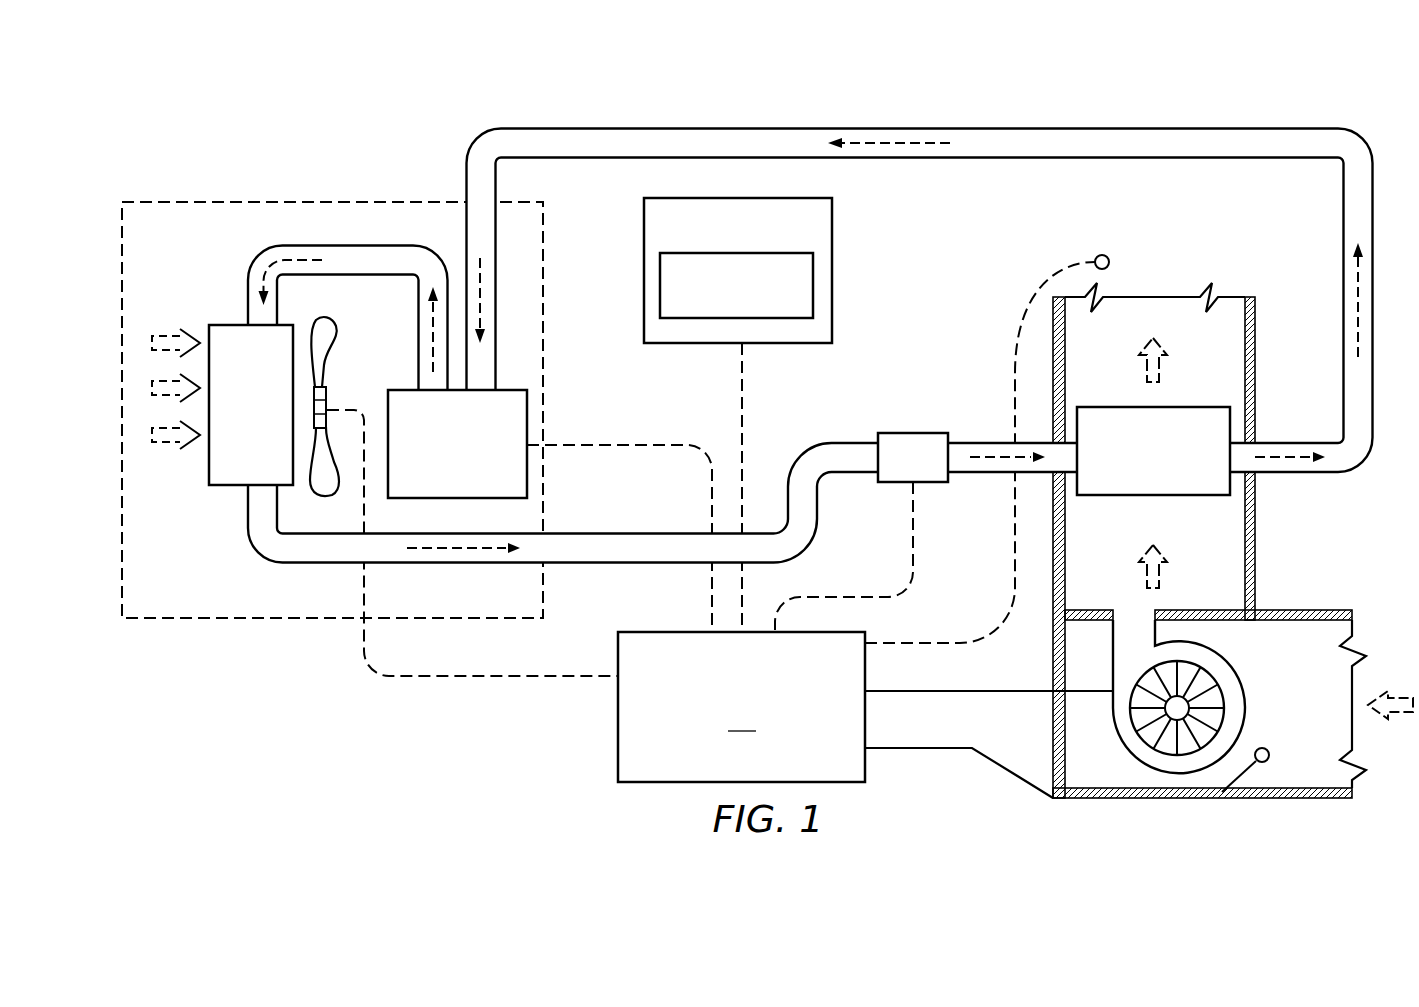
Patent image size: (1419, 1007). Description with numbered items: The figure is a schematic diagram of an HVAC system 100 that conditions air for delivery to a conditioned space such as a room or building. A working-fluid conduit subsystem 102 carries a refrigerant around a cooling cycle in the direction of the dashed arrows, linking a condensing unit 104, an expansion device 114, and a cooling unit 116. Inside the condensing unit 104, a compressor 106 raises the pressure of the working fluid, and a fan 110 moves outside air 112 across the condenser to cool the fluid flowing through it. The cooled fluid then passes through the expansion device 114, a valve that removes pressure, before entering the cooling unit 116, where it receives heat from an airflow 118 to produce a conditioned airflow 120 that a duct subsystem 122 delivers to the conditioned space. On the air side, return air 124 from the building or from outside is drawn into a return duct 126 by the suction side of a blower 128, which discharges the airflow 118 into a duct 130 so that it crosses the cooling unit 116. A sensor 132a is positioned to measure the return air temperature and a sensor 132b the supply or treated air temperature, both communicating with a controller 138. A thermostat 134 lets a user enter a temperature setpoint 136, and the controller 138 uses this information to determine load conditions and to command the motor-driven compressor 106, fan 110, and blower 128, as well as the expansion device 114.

The HVAC system 100 is at (1212, 70).
The working-fluid conduit subsystem 102 is at (343, 246).
The condensing unit 104 is at (330, 202).
The compressor 106 is at (442, 468).
The fan 110 is at (340, 335).
The air 112 is at (166, 333).
The expansion device 114 is at (899, 467).
The cooling unit 116 is at (1138, 474).
The airflow 118 is at (1160, 572).
The conditioned airflow 120 is at (1160, 372).
The duct subsystem 122 is at (1255, 345).
The return air 124 is at (1395, 720).
The return duct 126 is at (1285, 798).
The blower 128 is at (1230, 667).
The duct 130 is at (1255, 563).
The sensor 132a is at (1268, 748).
The sensor 132b is at (1110, 262).
The thermostat 134 is at (832, 222).
The temperature setpoint 136 is at (813, 283).
The controller 138 is at (720, 530).